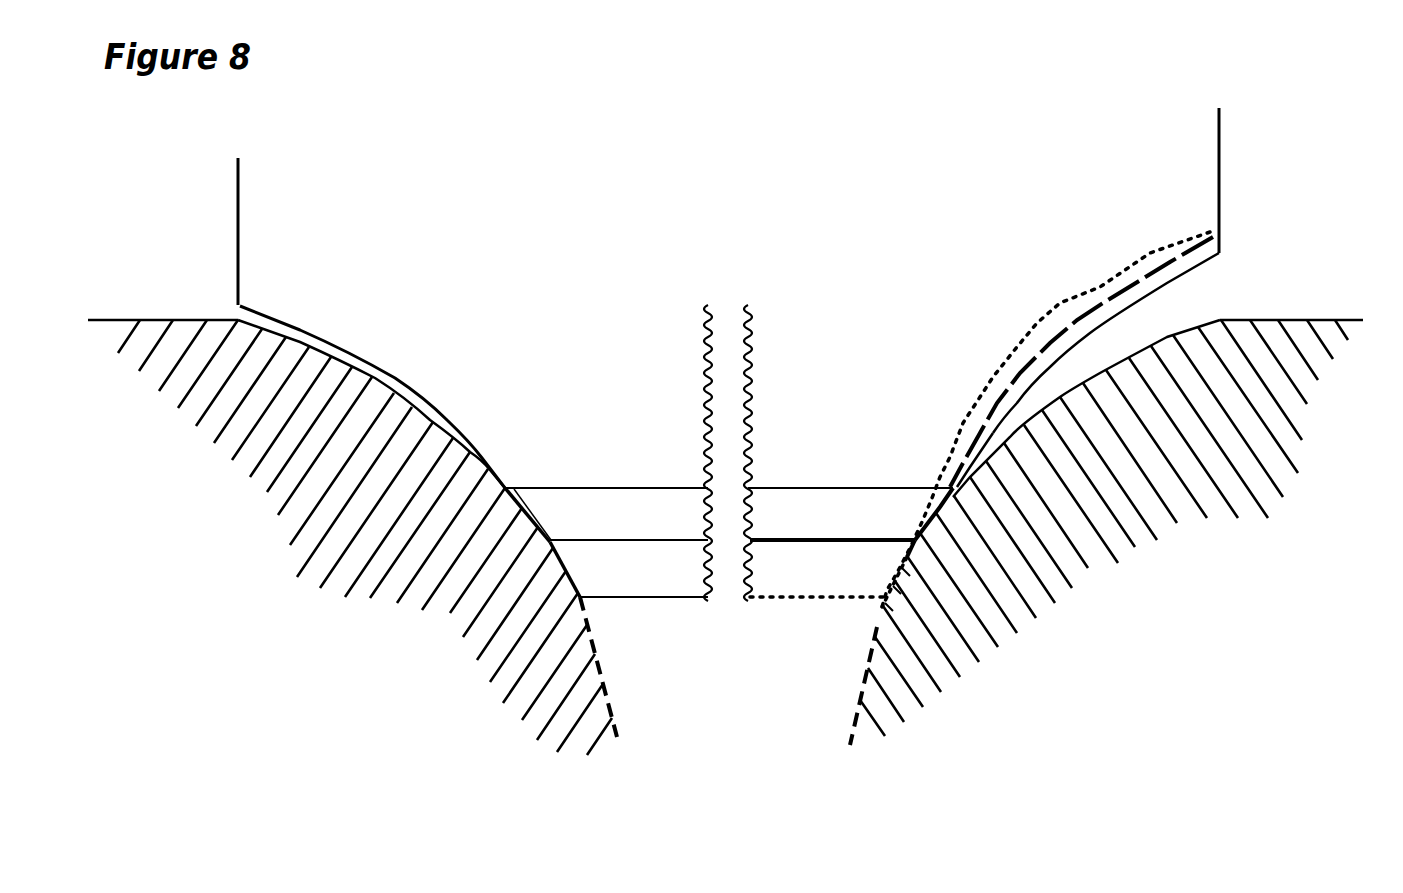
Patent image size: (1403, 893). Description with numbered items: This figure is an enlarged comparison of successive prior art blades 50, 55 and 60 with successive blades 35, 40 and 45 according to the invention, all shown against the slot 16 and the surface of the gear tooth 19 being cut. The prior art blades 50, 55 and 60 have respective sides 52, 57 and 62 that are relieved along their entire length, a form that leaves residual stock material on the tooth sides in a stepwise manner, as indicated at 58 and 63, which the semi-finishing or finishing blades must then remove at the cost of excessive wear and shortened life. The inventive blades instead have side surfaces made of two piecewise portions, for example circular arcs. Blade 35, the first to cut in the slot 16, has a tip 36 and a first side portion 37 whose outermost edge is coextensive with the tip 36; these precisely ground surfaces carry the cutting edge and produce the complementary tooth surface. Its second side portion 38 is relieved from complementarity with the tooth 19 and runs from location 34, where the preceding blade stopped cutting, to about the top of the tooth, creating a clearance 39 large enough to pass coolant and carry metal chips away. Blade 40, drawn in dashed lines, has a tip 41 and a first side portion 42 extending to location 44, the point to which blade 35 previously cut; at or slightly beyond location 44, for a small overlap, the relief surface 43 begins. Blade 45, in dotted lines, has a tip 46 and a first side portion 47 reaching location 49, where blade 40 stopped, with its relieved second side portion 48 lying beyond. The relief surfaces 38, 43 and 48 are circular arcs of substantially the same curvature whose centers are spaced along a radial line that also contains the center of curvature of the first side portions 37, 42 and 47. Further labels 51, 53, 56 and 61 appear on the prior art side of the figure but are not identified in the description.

The slot 16 is at (811, 720).
The gear tooth 19 is at (290, 522).
The location 34 is at (1005, 433).
The blade 35 is at (814, 478).
The tip 36 is at (867, 488).
The first side portion 37 is at (1050, 465).
The second side portion 38 is at (1122, 311).
The clearance 39 is at (1200, 302).
The blade 40 is at (814, 528).
The tip 41 is at (858, 540).
The first side portion 42 is at (930, 508).
The relief surface 43 is at (985, 403).
The location 44 is at (963, 482).
The blade 45 is at (814, 581).
The tip 46 is at (815, 597).
The first side portion 47 is at (900, 566).
The second side portion 48 is at (1040, 327).
The location 49 is at (920, 540).
The prior art blade 50 is at (700, 478).
The top boundary line 51 is at (612, 488).
The side 52 is at (400, 383).
The coating edge 53 is at (248, 318).
The prior art blade 55 is at (700, 528).
The middle boundary line 56 is at (620, 540).
The side 57 is at (538, 512).
The residual stock material 58 is at (520, 502).
The prior art blade 60 is at (700, 581).
The bottom boundary line 61 is at (657, 597).
The side 62 is at (568, 567).
The residual stock material 63 is at (553, 551).